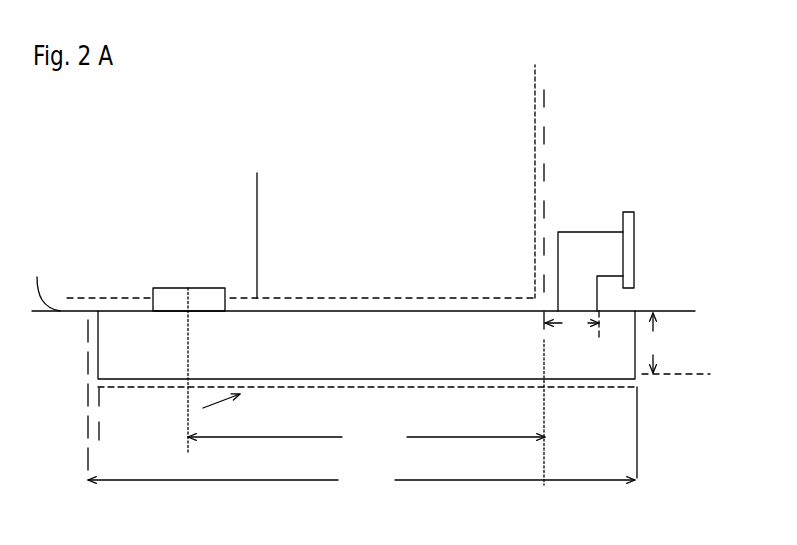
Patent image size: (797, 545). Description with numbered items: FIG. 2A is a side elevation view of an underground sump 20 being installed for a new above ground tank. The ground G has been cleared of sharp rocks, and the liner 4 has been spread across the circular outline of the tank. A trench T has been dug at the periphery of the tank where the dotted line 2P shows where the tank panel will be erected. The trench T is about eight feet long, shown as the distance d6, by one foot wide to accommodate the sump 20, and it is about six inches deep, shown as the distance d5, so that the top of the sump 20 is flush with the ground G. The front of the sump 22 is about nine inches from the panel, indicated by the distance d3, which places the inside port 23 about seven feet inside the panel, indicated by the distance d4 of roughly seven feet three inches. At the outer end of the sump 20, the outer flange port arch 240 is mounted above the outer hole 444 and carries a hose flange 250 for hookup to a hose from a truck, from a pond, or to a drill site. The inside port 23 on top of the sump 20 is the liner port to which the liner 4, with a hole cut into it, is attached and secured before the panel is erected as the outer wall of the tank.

The dotted line 2P is at (543, 87).
The outer flange port arch 240 is at (588, 231).
The hose flange 250 is at (632, 212).
The front of the sump 22 is at (598, 297).
The inside port 23 is at (202, 288).
The liner 4 is at (241, 222).
The sump 20 is at (583, 365).
The outer hole 444 is at (647, 397).
The ground G is at (363, 279).
The trench T is at (213, 403).
The distance from front of sump to panel d3 is at (572, 324).
The distance from inside port to panel d4 is at (366, 429).
The trench depth d5 is at (676, 343).
The trench length d6 is at (362, 439).